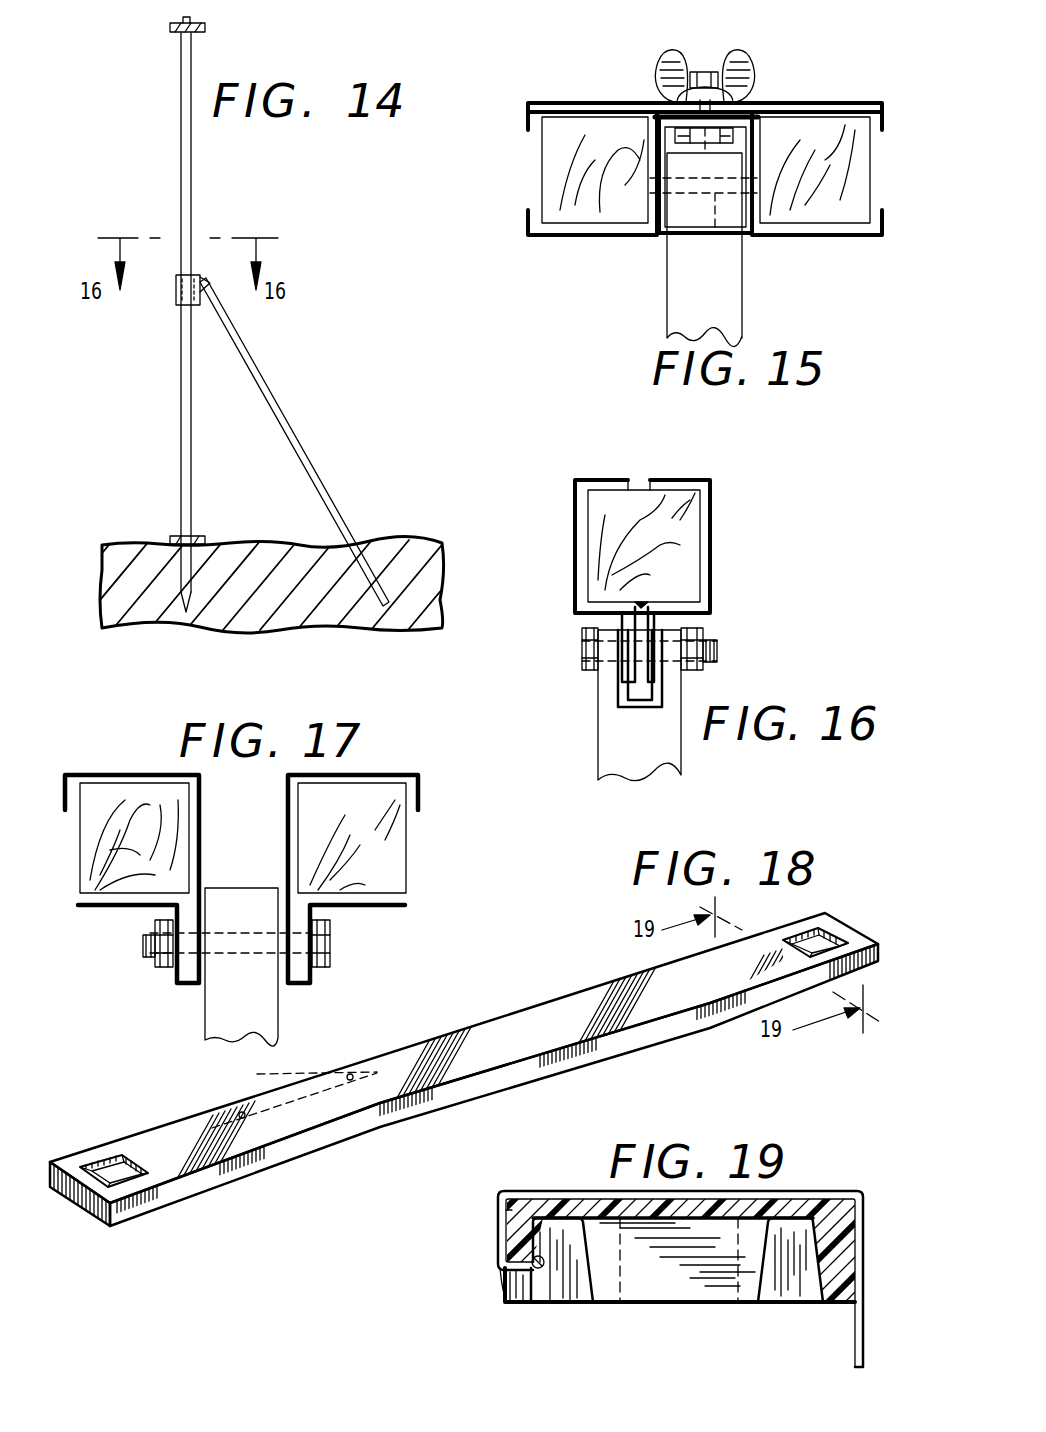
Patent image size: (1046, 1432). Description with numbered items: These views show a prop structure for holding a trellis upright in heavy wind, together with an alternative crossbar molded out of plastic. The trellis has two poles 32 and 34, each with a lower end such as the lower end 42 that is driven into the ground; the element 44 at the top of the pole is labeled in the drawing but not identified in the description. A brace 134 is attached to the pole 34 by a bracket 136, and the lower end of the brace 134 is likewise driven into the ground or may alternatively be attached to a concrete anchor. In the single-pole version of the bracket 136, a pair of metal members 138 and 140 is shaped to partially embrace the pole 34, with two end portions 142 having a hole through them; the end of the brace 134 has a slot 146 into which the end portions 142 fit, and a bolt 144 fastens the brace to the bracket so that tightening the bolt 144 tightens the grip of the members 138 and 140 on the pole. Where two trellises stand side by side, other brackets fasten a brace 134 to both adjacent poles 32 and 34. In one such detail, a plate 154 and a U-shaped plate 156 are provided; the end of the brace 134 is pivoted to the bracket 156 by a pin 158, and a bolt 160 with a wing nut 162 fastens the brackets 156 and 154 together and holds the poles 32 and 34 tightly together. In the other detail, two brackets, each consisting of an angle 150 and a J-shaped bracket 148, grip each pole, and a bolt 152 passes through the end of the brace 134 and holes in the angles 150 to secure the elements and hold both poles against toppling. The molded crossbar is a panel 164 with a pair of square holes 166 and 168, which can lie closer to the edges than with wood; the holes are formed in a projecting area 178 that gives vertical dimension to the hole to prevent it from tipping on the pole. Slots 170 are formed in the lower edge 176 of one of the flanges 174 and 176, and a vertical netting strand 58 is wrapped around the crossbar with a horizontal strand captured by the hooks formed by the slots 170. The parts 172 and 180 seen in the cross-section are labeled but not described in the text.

In FIG. 15, the pole 32 is at (860, 195).
In FIG. 17, the pole 32 is at (410, 860).
In FIG. 14, the pole 34 is at (192, 172).
In FIG. 15, the pole 34 is at (545, 170).
In FIG. 16, the pole 34 is at (590, 525).
In FIG. 17, the pole 34 is at (82, 852).
In FIG. 14, the lower end 42 is at (178, 537).
In FIG. 14, the cap 44 is at (172, 27).
In FIG. 19, the vertical netting strand 58 is at (775, 1199).
In FIG. 14, the brace 134 is at (270, 390).
In FIG. 15, the brace 134 is at (672, 283).
In FIG. 16, the brace 134 is at (677, 745).
In FIG. 17, the brace 134 is at (210, 1008).
In FIG. 14, the bracket 136 is at (177, 306).
In FIG. 16, the bracket 136 is at (562, 570).
In FIG. 16, the metal member 138 is at (607, 482).
In FIG. 16, the metal member 140 is at (663, 482).
In FIG. 16, the end portions 142 is at (590, 622).
In FIG. 16, the bolt 144 is at (585, 650).
In FIG. 16, the slot 146 is at (650, 698).
In FIG. 17, the J-shaped bracket 148 is at (140, 772).
In FIG. 17, the angle 150 is at (120, 908).
In FIG. 17, the bolt 152 is at (320, 967).
In FIG. 15, the plate 154 is at (820, 110).
In FIG. 15, the U-shaped plate 156 is at (845, 233).
In FIG. 15, the pin 158 is at (718, 240).
In FIG. 15, the bolt 160 is at (712, 66).
In FIG. 15, the wing nut 162 is at (664, 72).
In FIG. 18, the panel 164 is at (242, 1180).
In FIG. 19, the panel 164 is at (681, 1240).
In FIG. 18, the square hole 166 is at (106, 1170).
In FIG. 18, the square hole 168 is at (803, 932).
In FIG. 19, the square hole 168 is at (726, 1310).
In FIG. 18, the slots 170 is at (242, 1112).
In FIG. 19, the lip 172 is at (503, 1274).
In FIG. 19, the flange 174 is at (815, 1292).
In FIG. 19, the flange 176 is at (510, 1211).
In FIG. 19, the projecting area 178 is at (585, 1291).
In FIG. 19, the hook 180 is at (543, 1257).